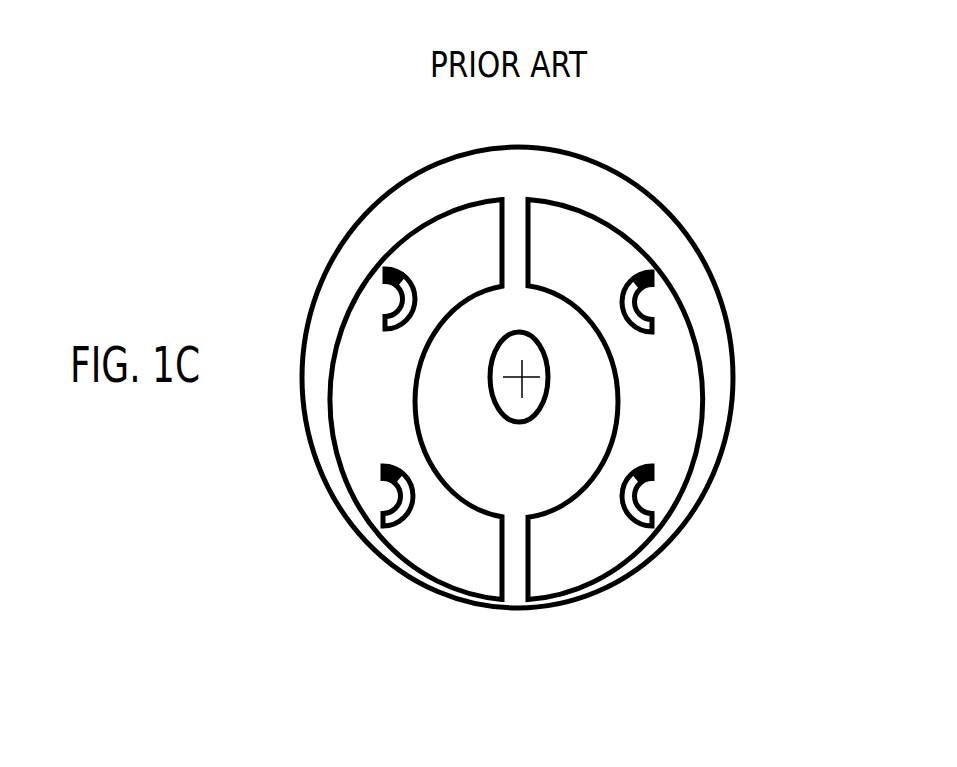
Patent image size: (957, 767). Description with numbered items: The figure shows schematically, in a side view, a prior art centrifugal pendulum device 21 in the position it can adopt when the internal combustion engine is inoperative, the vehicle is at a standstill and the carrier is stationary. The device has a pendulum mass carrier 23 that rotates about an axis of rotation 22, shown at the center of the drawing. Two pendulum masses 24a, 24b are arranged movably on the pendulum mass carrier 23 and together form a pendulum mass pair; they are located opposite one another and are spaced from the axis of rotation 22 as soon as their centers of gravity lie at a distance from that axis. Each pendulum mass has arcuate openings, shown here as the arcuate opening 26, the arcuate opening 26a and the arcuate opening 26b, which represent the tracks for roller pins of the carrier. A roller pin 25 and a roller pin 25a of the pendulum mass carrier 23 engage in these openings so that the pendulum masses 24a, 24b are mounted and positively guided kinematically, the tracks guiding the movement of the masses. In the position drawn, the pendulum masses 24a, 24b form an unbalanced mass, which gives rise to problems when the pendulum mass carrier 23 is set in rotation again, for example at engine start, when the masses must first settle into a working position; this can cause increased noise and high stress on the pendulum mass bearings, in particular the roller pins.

The centrifugal pendulum device 21 is at (632, 147).
The axis of rotation 22 is at (521, 362).
The pendulum mass carrier 23 is at (368, 212).
The pendulum mass 24a is at (472, 568).
The pendulum mass 24b is at (575, 572).
The roller pin 25 is at (387, 272).
The roller pin 25a is at (387, 475).
The arcuate opening 26 is at (653, 320).
The arcuate opening 26a is at (383, 322).
The arcuate opening 26b is at (650, 522).